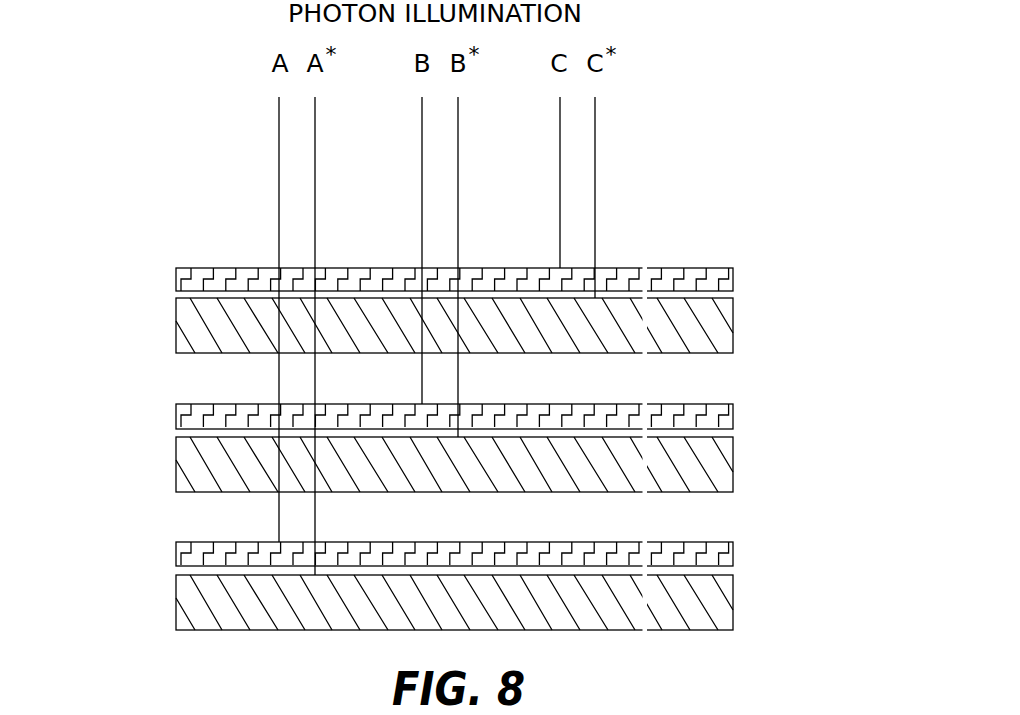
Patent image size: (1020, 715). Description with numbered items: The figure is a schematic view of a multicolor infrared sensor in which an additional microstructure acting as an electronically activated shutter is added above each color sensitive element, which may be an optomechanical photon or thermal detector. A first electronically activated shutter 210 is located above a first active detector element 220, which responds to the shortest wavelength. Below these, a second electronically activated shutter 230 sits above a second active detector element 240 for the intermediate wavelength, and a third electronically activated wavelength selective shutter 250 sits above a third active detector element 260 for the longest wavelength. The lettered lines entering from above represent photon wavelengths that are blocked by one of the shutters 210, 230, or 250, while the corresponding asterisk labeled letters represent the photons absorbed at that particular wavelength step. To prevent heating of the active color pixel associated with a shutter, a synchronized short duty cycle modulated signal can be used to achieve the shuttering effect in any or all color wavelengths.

The first electronically activated shutter 210 is at (176, 270).
The first active detector element 220 is at (176, 320).
The second electronically activated shutter 230 is at (401, 416).
The second active detector element 240 is at (176, 454).
The third electronically activated wavelength selective shutter 250 is at (401, 554).
The third active detector element 260 is at (176, 591).